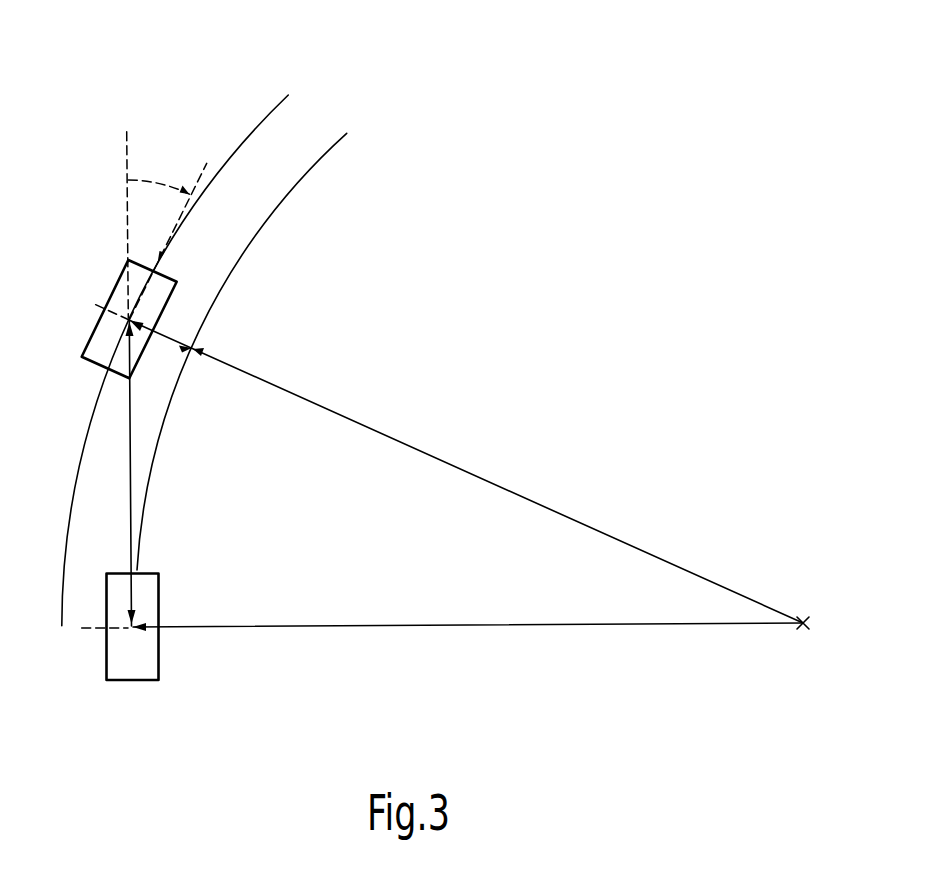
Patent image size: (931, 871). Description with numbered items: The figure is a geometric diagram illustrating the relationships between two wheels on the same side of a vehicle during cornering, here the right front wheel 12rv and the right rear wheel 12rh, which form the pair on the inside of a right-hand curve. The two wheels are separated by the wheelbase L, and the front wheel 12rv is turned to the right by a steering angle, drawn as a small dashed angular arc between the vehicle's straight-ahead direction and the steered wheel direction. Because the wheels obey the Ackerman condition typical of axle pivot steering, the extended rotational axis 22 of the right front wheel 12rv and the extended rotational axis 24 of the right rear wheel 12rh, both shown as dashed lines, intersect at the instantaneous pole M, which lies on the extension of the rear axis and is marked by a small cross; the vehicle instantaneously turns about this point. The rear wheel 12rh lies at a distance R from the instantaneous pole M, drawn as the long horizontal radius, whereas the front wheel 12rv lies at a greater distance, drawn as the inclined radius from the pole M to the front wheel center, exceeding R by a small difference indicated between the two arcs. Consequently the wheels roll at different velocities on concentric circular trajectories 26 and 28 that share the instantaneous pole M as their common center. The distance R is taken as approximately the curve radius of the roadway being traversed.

The circular trajectory 26 is at (247, 135).
The circular trajectory 28 is at (307, 173).
The extended rotational axis of right front wheel 22 is at (99, 306).
The extended rotational axis of right rear wheel 24 is at (87, 630).
The right front wheel 12rv is at (102, 348).
The right rear wheel 12rh is at (143, 670).
The wheelbase L is at (128, 467).
The distance of rear wheel from instantaneous pole R is at (460, 468).
The instantaneous pole M is at (801, 640).